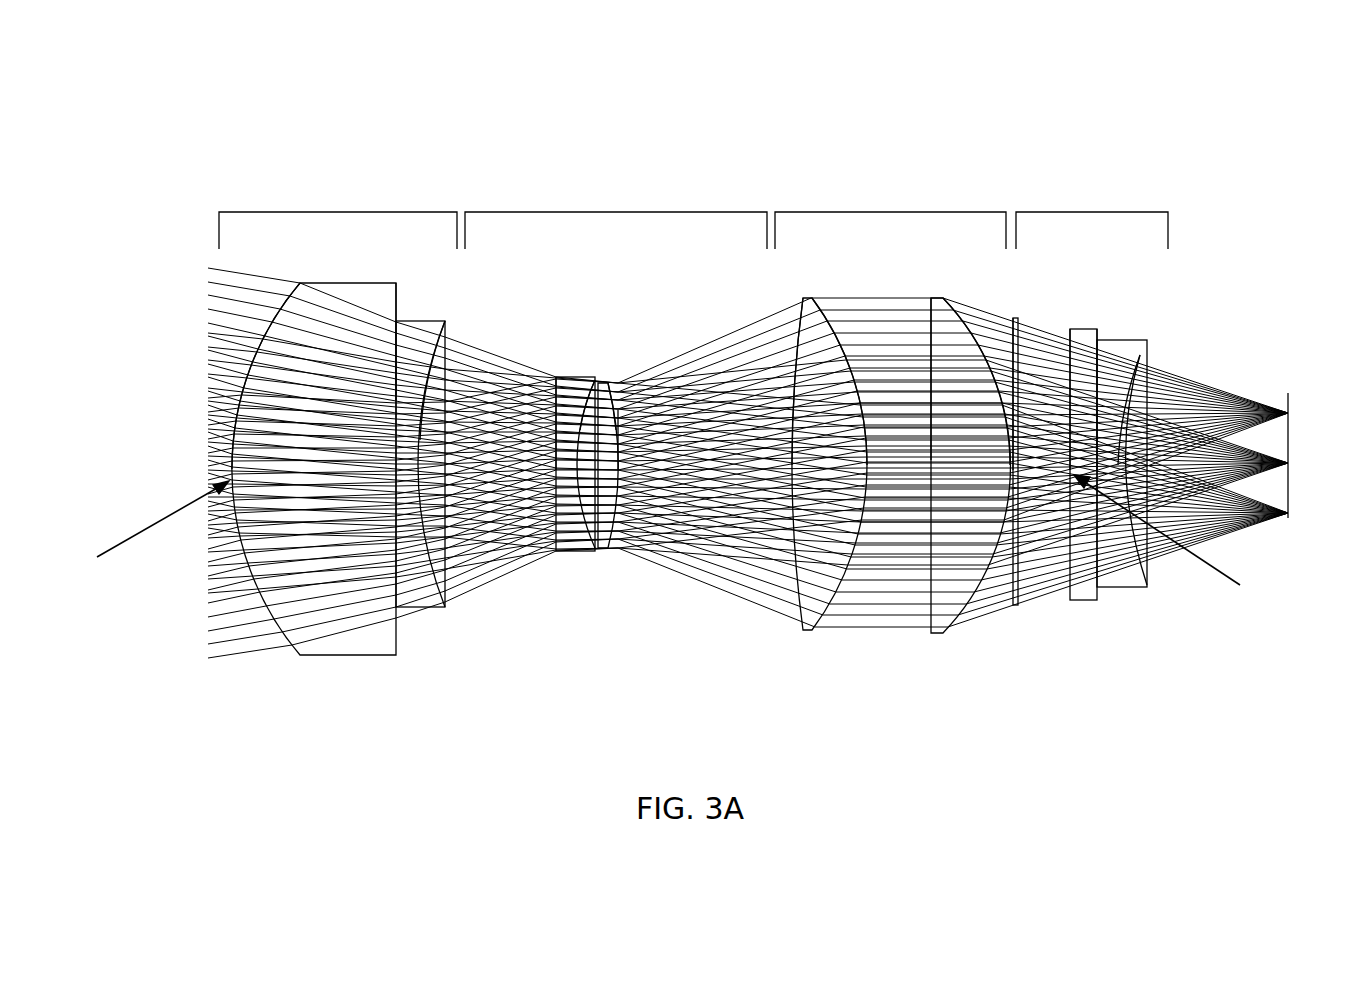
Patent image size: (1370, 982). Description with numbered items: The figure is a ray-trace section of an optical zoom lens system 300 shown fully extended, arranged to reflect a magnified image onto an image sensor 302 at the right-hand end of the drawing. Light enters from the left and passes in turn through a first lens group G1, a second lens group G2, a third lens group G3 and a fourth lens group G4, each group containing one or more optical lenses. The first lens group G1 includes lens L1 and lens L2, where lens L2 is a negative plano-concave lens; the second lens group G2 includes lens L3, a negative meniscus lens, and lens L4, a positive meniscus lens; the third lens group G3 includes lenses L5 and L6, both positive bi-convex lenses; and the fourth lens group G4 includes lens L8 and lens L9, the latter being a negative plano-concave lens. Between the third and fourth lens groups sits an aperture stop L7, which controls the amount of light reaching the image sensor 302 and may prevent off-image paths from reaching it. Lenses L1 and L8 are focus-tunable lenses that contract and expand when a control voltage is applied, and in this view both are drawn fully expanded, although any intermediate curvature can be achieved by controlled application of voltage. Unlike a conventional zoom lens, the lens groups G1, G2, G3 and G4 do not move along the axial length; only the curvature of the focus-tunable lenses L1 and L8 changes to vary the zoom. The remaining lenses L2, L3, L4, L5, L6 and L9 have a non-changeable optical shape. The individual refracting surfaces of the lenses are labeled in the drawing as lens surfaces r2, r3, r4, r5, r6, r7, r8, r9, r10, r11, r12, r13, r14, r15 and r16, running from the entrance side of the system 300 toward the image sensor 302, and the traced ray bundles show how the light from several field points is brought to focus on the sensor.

The optical zoom lens system 300 is at (808, 116).
The image sensor 302 is at (1290, 393).
The first lens group G1 is at (338, 212).
The second lens group G2 is at (616, 212).
The third lens group G3 is at (890, 212).
The fourth lens group G4 is at (1092, 212).
The focus-tunable lens L1 is at (315, 567).
The negative plano-concave lens L2 is at (460, 583).
The negative meniscus lens L3 is at (570, 557).
The positive meniscus lens L4 is at (613, 555).
The positive bi-convex lens L5 is at (812, 578).
The positive bi-convex lens L6 is at (955, 593).
The aperture stop L7 is at (1017, 587).
The focus-tunable lens L8 is at (1087, 577).
The negative plano-concave lens L9 is at (1118, 545).
The lens surface r2 is at (236, 415).
The lens surface r3 is at (396, 318).
The lens surface r4 is at (445, 368).
The lens surface r5 is at (532, 380).
The lens surface r6 is at (606, 380).
The lens surface r7 is at (623, 387).
The lens surface r8 is at (665, 380).
The lens surface r9 is at (785, 395).
The lens surface r10 is at (866, 380).
The lens surface r11 is at (927, 395).
The lens surface r12 is at (992, 373).
The lens surface r13 is at (1016, 360).
The lens surface r14 is at (1068, 352).
The lens surface r15 is at (1100, 360).
The lens surface r16 is at (1137, 363).